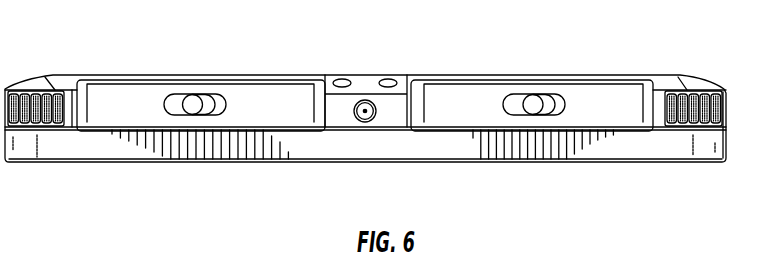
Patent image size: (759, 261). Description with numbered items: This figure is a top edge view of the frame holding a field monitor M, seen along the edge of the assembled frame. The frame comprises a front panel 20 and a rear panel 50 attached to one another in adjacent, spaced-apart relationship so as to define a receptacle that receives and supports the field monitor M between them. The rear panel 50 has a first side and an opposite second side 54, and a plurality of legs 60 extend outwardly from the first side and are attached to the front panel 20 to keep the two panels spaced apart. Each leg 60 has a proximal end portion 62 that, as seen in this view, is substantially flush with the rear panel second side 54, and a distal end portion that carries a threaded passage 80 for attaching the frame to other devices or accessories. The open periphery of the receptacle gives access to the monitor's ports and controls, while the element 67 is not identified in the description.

The electronic device housing 50 is at (489, 73).
The side panel 54 is at (201, 74).
The marking on panel M is at (123, 95).
The first opening 62 is at (336, 77).
The second opening 60 is at (371, 80).
The oval ports 67 is at (380, 54).
The circular connector port 80 is at (370, 120).
The lower housing base 20 is at (605, 143).